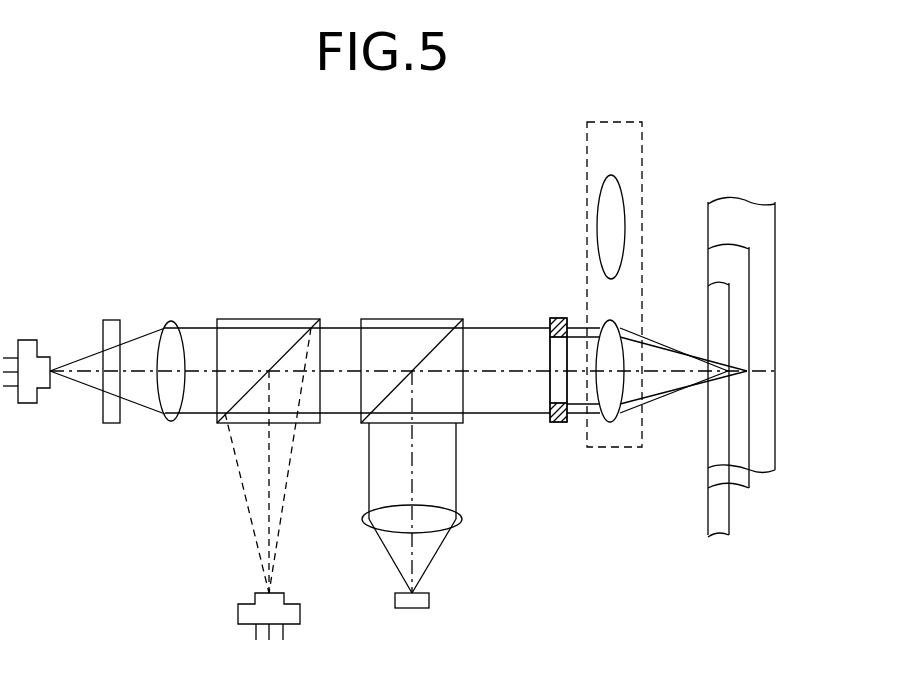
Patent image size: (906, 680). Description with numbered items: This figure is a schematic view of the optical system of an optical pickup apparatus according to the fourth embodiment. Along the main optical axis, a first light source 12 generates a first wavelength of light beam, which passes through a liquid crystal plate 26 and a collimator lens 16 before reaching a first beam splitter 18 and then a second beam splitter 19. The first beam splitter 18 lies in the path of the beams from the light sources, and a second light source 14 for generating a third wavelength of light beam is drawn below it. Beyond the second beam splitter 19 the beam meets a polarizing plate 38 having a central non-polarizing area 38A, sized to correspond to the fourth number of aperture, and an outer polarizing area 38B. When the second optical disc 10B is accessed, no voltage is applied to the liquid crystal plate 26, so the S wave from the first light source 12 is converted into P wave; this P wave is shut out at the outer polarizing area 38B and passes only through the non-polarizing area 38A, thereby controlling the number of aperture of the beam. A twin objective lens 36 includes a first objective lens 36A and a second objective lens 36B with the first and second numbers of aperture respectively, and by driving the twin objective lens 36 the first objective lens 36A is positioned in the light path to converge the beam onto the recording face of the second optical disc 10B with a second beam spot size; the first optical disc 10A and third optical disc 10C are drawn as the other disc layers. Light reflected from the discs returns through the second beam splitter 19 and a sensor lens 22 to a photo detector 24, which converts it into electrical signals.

The first optical disc 10A is at (721, 512).
The second optical disc 10B is at (743, 343).
The third optical disc 10C is at (764, 286).
The first light source 12 is at (30, 342).
The second light source 14 is at (299, 605).
The collimator lens 16 is at (168, 323).
The first beam splitter 18 is at (320, 319).
The second beam splitter 19 is at (463, 319).
The sensor lens 22 is at (460, 517).
The photo detector 24 is at (423, 602).
The liquid crystal plate 26 is at (117, 320).
The twin objective lens 36 is at (645, 265).
The first objective lens 36A is at (617, 320).
The second objective lens 36B is at (611, 175).
The polarizing plate 38 is at (535, 386).
The non-polarizing area 38A is at (557, 393).
The outer polarizing area 38B is at (560, 422).